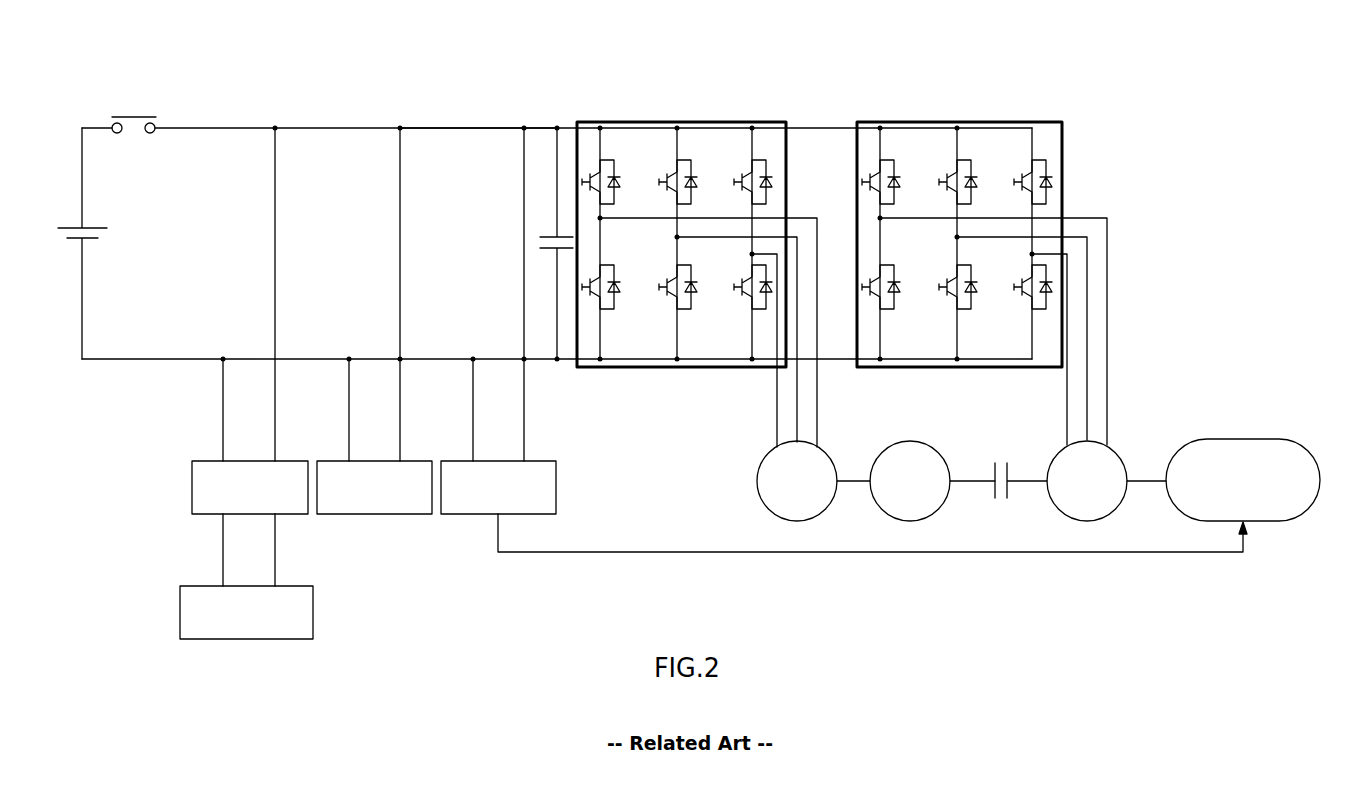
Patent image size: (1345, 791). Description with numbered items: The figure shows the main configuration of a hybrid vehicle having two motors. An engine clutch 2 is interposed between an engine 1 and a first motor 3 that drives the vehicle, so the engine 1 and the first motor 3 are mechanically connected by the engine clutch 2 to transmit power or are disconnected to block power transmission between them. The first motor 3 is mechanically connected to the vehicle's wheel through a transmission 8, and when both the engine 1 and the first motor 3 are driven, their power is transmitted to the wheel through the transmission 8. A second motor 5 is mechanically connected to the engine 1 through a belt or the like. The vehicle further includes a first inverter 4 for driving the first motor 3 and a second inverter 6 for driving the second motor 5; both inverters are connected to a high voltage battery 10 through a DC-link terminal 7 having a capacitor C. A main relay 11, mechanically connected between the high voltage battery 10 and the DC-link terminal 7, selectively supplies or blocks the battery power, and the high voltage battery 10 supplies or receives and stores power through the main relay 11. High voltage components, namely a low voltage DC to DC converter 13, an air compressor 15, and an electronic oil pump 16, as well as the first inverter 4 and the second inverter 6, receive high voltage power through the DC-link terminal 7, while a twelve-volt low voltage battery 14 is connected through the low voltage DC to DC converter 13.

The engine 1 is at (893, 443).
The engine clutch 2 is at (990, 465).
The first motor 3 is at (1117, 452).
The first inverter 4 is at (913, 122).
The second motor 5 is at (758, 465).
The second inverter 6 is at (643, 122).
The DC-link terminal 7 is at (458, 128).
The transmission 8 is at (1243, 438).
The high voltage battery 10 is at (75, 226).
The main relay 11 is at (144, 115).
The low voltage DC to DC converter 13 is at (190, 490).
The low voltage battery 14 is at (178, 610).
The air compressor 15 is at (368, 516).
The electronic oil pump 16 is at (468, 516).
The capacitor C is at (553, 237).